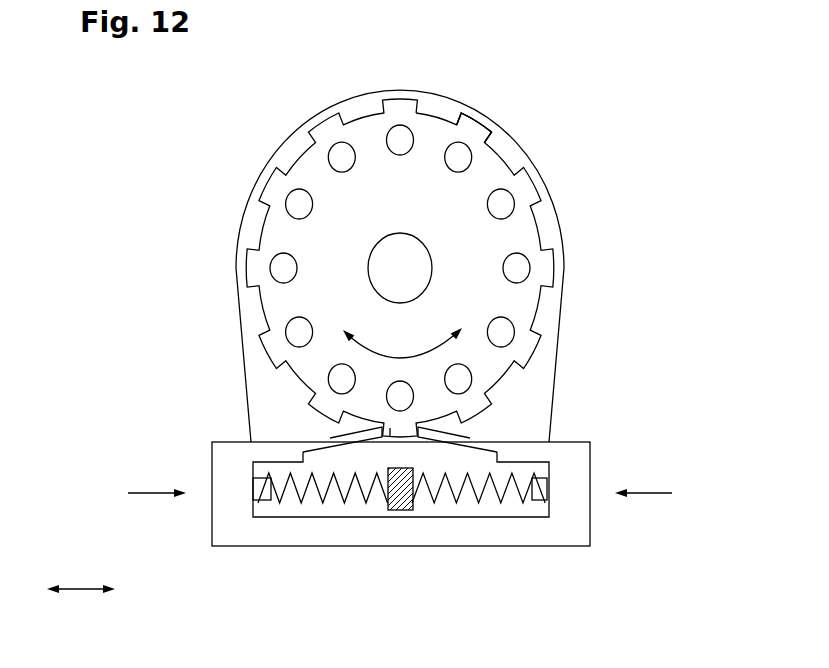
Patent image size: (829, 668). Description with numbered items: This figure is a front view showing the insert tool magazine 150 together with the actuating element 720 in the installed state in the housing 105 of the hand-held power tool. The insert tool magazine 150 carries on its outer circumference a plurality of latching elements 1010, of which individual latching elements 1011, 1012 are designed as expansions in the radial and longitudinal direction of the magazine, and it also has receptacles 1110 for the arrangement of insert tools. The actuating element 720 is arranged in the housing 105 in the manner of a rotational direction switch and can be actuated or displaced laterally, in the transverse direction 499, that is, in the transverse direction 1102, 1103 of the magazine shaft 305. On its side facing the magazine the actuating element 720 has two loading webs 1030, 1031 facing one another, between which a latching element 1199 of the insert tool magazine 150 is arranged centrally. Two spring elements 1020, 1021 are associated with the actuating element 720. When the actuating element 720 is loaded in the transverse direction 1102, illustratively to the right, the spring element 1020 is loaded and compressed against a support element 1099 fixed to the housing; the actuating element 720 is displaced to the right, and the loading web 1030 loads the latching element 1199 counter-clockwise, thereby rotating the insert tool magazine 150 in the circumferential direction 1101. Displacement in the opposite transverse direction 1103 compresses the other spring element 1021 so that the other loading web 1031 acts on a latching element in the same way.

The housing 105 is at (567, 270).
The insert tool magazine 150 is at (570, 149).
The latching element 1012 is at (530, 187).
The plurality of latching elements 1010 is at (477, 130).
The latching element 1011 is at (518, 103).
The receptacles 1110 is at (402, 157).
The magazine shaft 305 is at (402, 268).
The circumferential direction 1101 is at (400, 357).
The actuating element 720 is at (624, 451).
The loading web 1030 is at (333, 437).
The loading web 1031 is at (467, 437).
The latching element 1199 is at (392, 428).
The spring element 1020 is at (303, 482).
The spring element 1021 is at (512, 470).
The support element 1099 is at (405, 505).
The transverse direction 1102 is at (150, 493).
The transverse direction 1103 is at (650, 493).
The transverse direction 499 is at (82, 588).